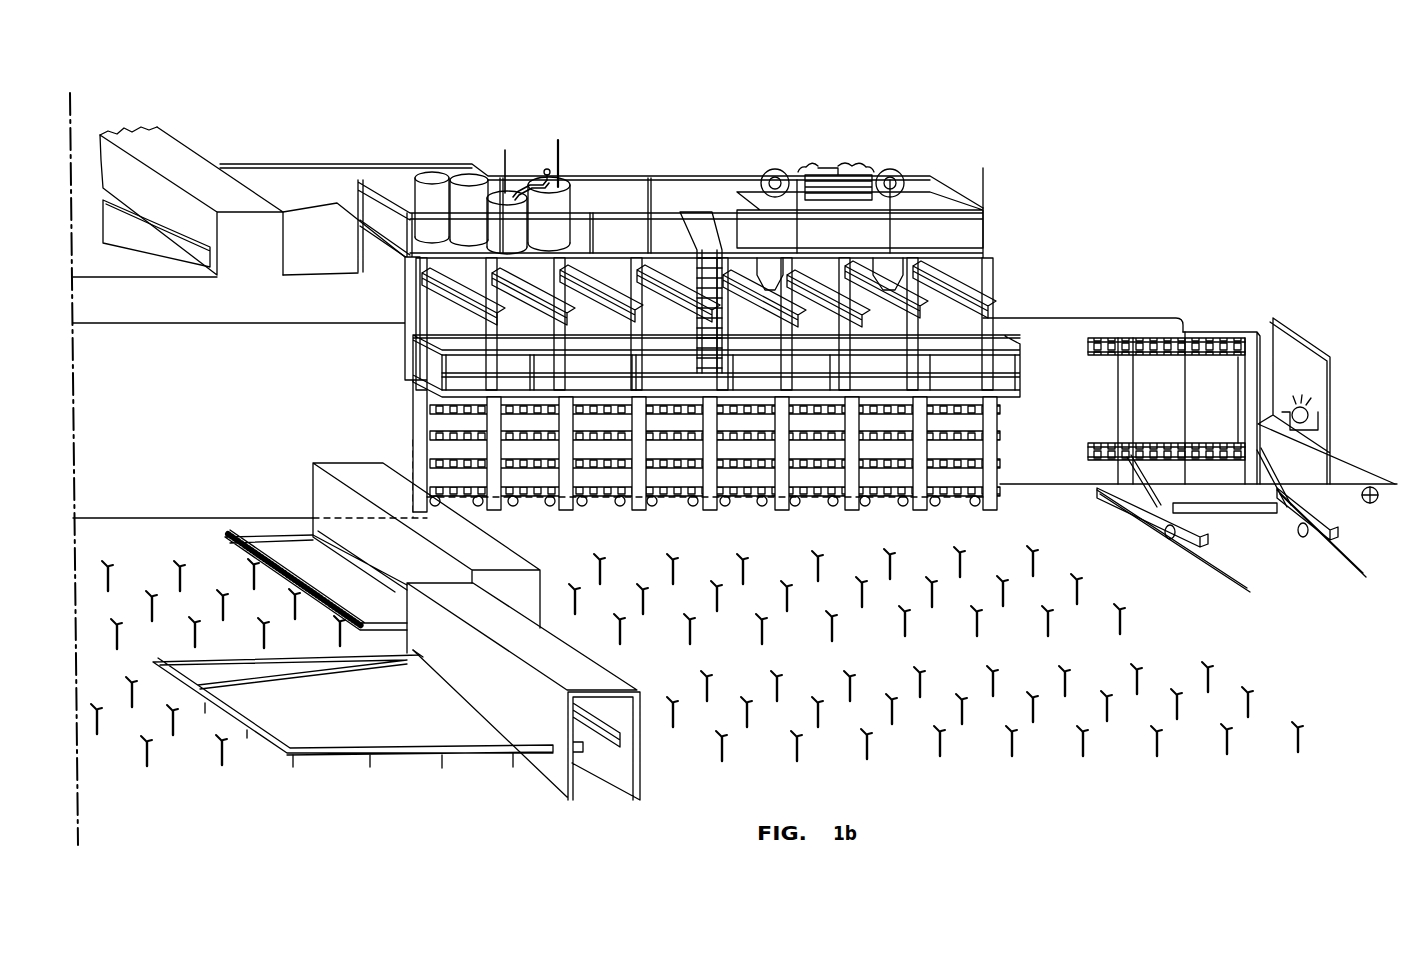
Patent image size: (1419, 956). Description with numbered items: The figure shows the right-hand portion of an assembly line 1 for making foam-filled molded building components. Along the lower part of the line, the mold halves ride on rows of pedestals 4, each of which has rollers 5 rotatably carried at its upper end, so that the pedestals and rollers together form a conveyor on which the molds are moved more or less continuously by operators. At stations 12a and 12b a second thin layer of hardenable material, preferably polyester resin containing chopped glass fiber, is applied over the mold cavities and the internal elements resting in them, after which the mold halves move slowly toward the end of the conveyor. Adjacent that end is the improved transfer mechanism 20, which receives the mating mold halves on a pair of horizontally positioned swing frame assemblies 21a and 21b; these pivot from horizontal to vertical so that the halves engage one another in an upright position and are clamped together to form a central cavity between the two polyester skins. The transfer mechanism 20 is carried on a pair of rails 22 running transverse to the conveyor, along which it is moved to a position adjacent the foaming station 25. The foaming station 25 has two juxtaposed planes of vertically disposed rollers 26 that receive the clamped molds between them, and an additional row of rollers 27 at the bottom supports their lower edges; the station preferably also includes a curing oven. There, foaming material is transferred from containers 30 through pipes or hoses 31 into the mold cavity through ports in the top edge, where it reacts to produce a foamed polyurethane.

The assembly line 1 is at (602, 333).
The pedestals 4 is at (263, 630).
The rollers 5 is at (112, 566).
The station 12a is at (505, 541).
The station 12b is at (625, 678).
The transfer mechanism 20 is at (1241, 388).
The swing frame assembly 21a is at (1260, 355).
The swing frame assembly 21b is at (1205, 333).
The rails 22 is at (1330, 553).
The foaming station 25 is at (830, 160).
The rollers 26 is at (985, 428).
The row of rollers 27 is at (973, 502).
The containers 30 is at (542, 175).
The pipes or hoses 31 is at (561, 155).